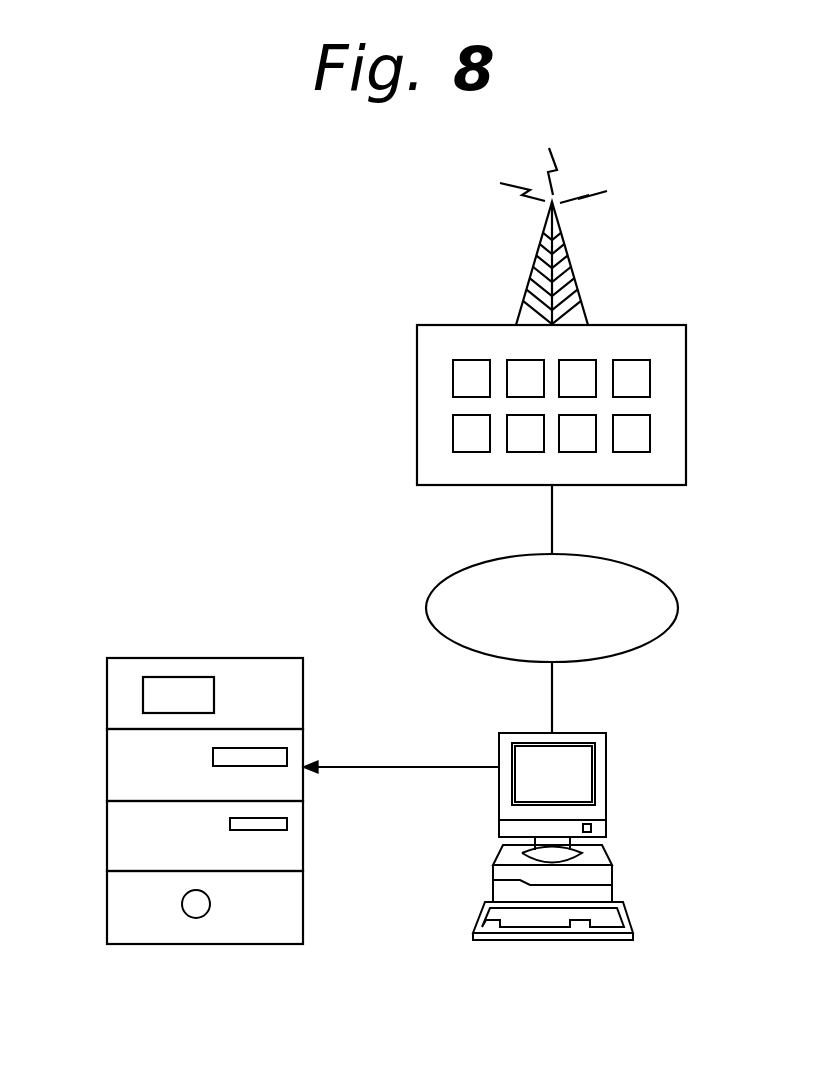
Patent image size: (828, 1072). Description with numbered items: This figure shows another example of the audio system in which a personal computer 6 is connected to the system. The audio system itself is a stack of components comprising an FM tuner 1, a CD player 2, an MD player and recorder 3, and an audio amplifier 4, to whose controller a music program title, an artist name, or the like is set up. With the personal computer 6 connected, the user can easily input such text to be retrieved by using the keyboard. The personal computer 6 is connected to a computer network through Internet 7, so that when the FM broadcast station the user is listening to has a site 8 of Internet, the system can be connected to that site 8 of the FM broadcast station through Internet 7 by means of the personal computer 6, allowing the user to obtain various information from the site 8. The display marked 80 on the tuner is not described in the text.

The FM tuner 1 is at (107, 697).
The CD player 2 is at (107, 768).
The MD player and recorder 3 is at (107, 838).
The audio amplifier 4 is at (107, 907).
The personal computer 6 is at (606, 777).
The Internet 7 is at (668, 585).
The site of FM broadcast station 8 is at (686, 396).
The display 80 is at (178, 695).